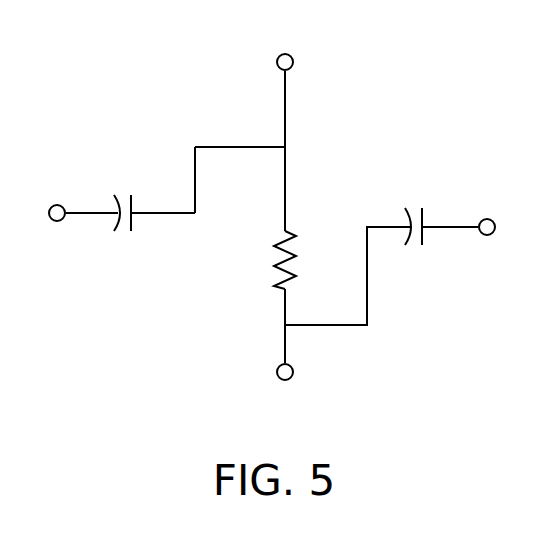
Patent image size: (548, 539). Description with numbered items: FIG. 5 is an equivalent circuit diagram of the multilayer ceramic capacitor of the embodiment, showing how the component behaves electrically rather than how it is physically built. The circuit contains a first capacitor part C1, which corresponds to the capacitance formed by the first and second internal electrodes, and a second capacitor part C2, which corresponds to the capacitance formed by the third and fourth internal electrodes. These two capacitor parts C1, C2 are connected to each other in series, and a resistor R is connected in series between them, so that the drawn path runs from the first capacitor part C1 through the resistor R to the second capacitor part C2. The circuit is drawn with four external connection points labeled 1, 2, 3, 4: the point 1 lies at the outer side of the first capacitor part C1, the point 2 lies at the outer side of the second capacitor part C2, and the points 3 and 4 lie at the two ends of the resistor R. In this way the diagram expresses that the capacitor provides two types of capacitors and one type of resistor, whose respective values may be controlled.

The first terminal 1 is at (46, 214).
The second terminal 2 is at (501, 228).
The third terminal 3 is at (285, 391).
The fourth terminal 4 is at (285, 43).
The first capacitor part C1 is at (122, 229).
The second capacitor part C2 is at (414, 243).
The resistor R is at (300, 260).